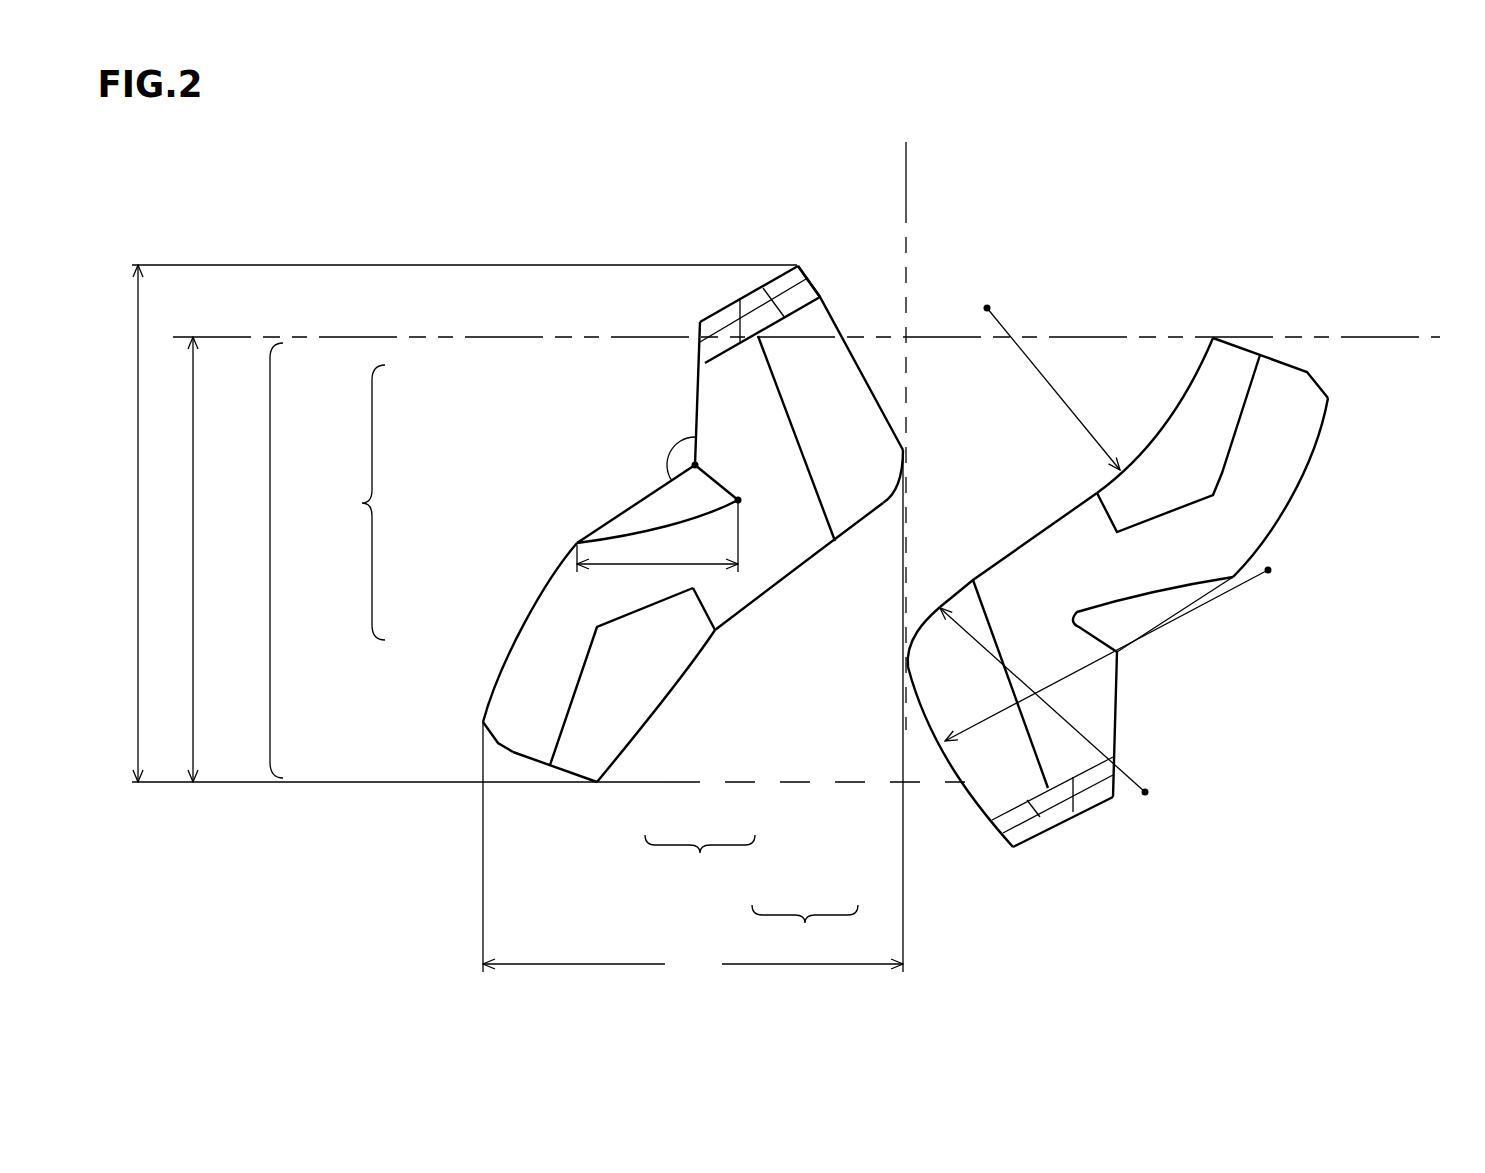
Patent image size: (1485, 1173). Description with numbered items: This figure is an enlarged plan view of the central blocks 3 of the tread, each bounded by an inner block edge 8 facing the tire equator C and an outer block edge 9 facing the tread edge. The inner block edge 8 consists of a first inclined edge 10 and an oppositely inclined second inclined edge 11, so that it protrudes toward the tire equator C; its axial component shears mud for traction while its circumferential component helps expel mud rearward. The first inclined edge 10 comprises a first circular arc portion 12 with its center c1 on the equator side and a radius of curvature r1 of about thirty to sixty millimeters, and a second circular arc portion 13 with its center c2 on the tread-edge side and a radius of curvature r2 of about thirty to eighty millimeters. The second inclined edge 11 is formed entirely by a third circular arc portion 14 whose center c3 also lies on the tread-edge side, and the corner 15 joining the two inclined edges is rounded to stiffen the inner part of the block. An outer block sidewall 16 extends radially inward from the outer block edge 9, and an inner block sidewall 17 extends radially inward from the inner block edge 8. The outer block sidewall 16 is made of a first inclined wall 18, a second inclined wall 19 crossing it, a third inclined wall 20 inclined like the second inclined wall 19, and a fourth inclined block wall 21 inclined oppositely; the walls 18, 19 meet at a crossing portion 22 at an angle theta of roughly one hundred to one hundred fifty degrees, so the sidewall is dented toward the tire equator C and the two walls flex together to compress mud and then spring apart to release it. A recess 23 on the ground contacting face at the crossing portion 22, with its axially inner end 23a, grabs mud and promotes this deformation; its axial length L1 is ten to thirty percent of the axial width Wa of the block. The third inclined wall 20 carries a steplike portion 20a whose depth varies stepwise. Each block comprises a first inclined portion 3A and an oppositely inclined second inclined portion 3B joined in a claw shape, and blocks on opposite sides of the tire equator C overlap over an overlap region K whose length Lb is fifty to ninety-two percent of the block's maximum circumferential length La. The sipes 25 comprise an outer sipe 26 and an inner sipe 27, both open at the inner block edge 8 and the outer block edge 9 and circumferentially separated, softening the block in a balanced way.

The central block 3 is at (863, 440).
The first inclined portion 3A is at (1242, 500).
The second inclined portion 3B is at (1088, 698).
The inner block edge 8 is at (627, 740).
The outer block edge 9 is at (548, 757).
The first inclined edge 10 is at (805, 931).
The second inclined edge 11 is at (966, 790).
The first circular arc portion 12 is at (1093, 472).
The second circular arc portion 13 is at (935, 617).
The third circular arc portion 14 is at (942, 785).
The corner 15 is at (907, 667).
The outer block sidewall 16 is at (354, 502).
The inner block sidewall 17 is at (907, 460).
The first inclined wall 18 is at (695, 400).
The second inclined wall 19 is at (556, 560).
The third inclined wall 20 is at (700, 322).
The steplike portion 20a is at (778, 278).
The fourth inclined block wall 21 is at (500, 748).
The crossing portion 22 is at (725, 340).
The recess 23 is at (657, 513).
The axially inner end 23a is at (810, 340).
The sipe 25 is at (700, 860).
The outer sipe 26 is at (587, 665).
The inner sipe 27 is at (815, 497).
The tire equator C is at (906, 418).
The center c1 is at (1047, 371).
The center c2 is at (1065, 714).
The center c3 is at (1127, 646).
The radius of curvature r1 is at (1057, 390).
The radius of curvature r2 is at (1083, 740).
The maximum circumferential length La is at (135, 523).
The length of overlap region Lb is at (190, 559).
The overlap region K is at (256, 560).
The axial length L1 is at (640, 563).
The axial width Wa is at (693, 718).
The angle theta is at (675, 452).